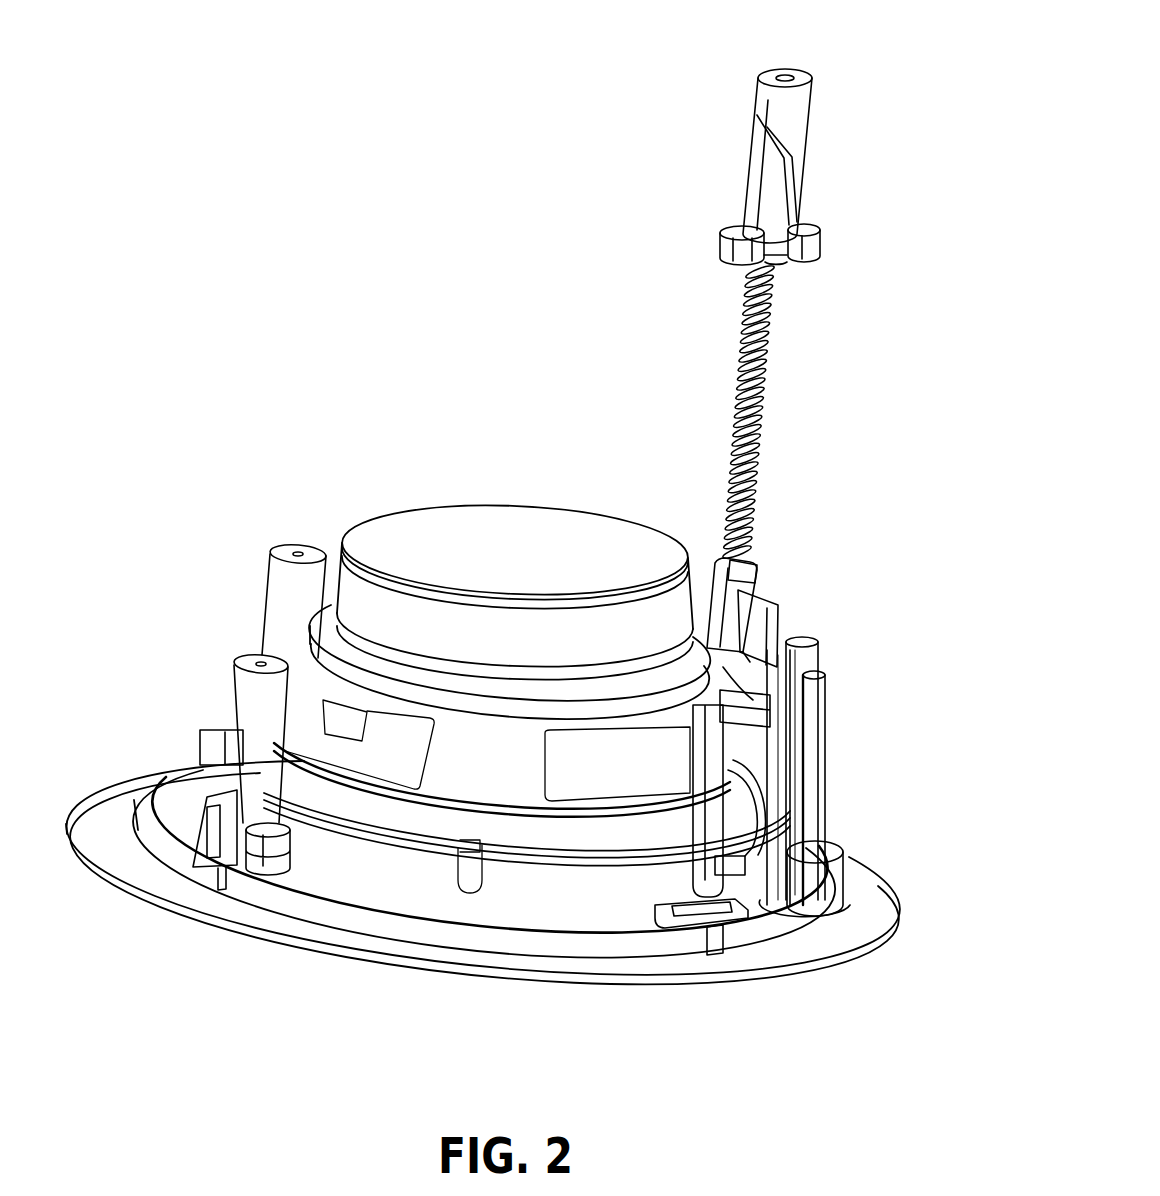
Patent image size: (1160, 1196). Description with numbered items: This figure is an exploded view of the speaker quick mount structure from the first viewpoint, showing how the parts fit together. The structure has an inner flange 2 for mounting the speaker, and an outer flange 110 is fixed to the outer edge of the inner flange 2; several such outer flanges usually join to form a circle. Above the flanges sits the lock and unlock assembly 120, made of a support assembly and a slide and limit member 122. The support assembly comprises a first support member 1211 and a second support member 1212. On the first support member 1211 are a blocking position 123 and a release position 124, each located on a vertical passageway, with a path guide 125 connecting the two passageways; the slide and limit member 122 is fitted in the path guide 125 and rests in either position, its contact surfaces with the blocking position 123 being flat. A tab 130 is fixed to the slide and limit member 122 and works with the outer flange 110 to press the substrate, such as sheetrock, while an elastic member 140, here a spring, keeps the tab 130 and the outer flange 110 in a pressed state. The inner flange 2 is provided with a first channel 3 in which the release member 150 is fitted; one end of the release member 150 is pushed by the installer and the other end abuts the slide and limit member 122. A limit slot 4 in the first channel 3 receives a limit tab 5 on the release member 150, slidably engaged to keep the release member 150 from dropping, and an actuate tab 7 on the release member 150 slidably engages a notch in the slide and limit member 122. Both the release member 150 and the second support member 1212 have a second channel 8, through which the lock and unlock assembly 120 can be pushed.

The inner flange 2 is at (308, 892).
The first channel 3 is at (700, 913).
The limit slot 4 is at (718, 933).
The limit tab 5 is at (723, 865).
The actuate tab 7 is at (693, 757).
The second channel 8 is at (742, 860).
The outer flange 110 is at (867, 912).
The lock and unlock assembly 120 is at (931, 82).
The first support member 1211 is at (802, 115).
The second support member 1212 is at (737, 713).
The slide and limit member 122 is at (752, 581).
The blocking position 123 is at (755, 154).
The release position 124 is at (785, 217).
The path guide 125 is at (778, 155).
The tab 130 is at (786, 606).
The elastic member 140 is at (765, 358).
The release member 150 is at (728, 868).